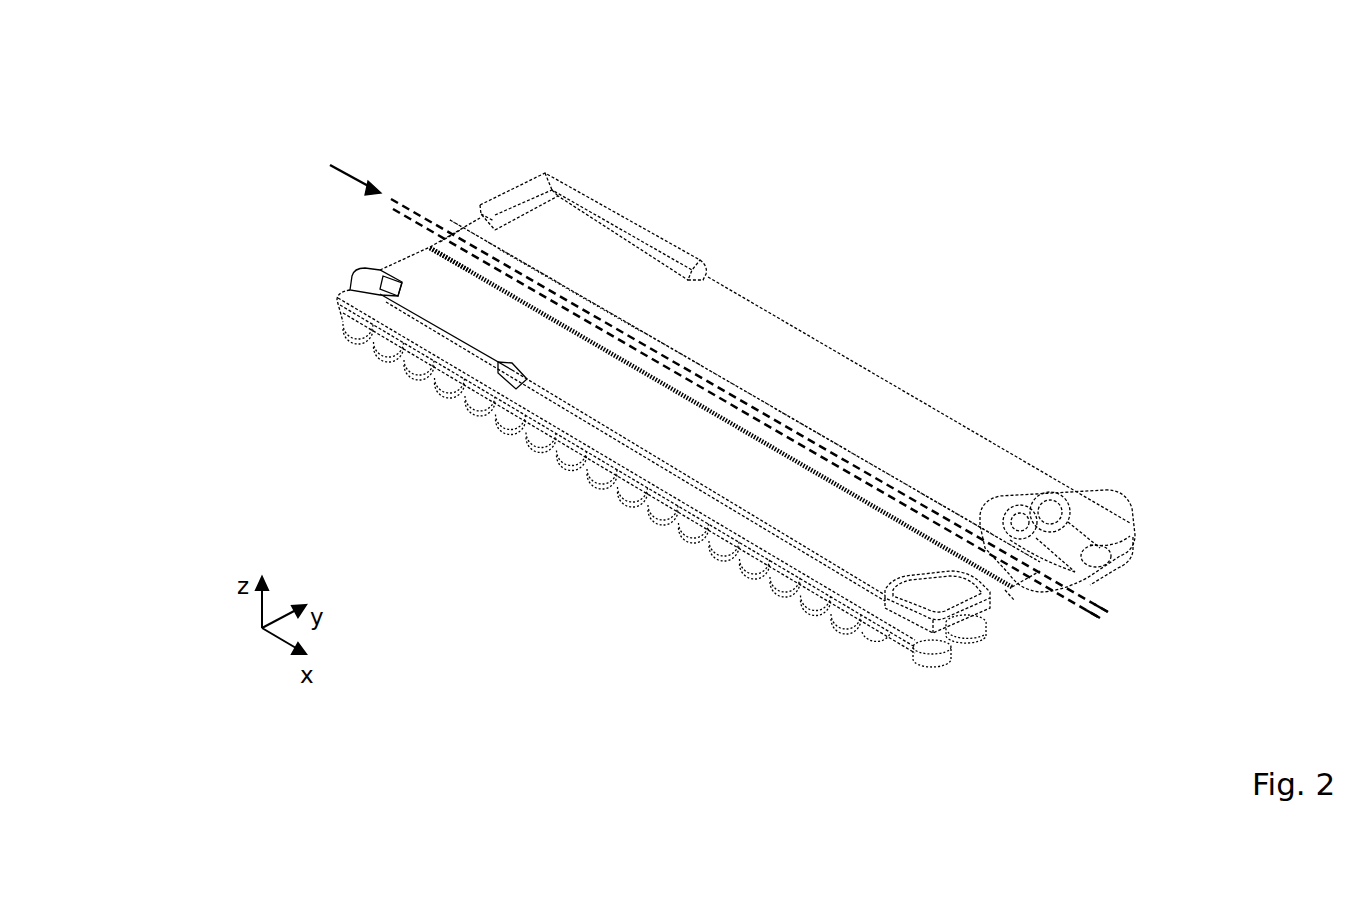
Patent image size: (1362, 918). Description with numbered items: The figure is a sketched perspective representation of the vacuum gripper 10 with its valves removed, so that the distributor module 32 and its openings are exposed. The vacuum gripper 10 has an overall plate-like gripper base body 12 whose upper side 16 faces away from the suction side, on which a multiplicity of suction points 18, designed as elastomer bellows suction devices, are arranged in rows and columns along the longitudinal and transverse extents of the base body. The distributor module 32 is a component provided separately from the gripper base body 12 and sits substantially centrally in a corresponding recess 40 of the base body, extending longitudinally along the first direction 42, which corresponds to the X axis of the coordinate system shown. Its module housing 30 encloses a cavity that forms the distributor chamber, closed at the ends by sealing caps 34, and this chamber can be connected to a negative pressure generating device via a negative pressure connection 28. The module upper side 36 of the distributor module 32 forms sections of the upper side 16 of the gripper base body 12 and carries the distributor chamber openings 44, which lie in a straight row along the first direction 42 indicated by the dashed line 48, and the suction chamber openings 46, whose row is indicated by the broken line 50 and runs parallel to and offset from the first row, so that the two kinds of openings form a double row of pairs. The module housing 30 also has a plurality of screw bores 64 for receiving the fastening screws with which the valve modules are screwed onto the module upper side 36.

The vacuum gripper 10 is at (727, 114).
The gripper base body 12 is at (835, 358).
The upper side 16 is at (778, 601).
The suction points 18 is at (928, 668).
The negative pressure connection 28 is at (1045, 502).
The module housing 30 is at (428, 248).
The distributor module 32 is at (452, 226).
The sealing caps 34 is at (1030, 580).
The module upper side 36 is at (567, 296).
The recess 40 is at (1022, 582).
The first direction 42 is at (330, 165).
The distributor chamber openings 44 is at (865, 480).
The suction chamber openings 46 is at (902, 492).
The dashed line 48 is at (1093, 612).
The broken line 50 is at (1107, 613).
The screw bores 64 is at (763, 405).